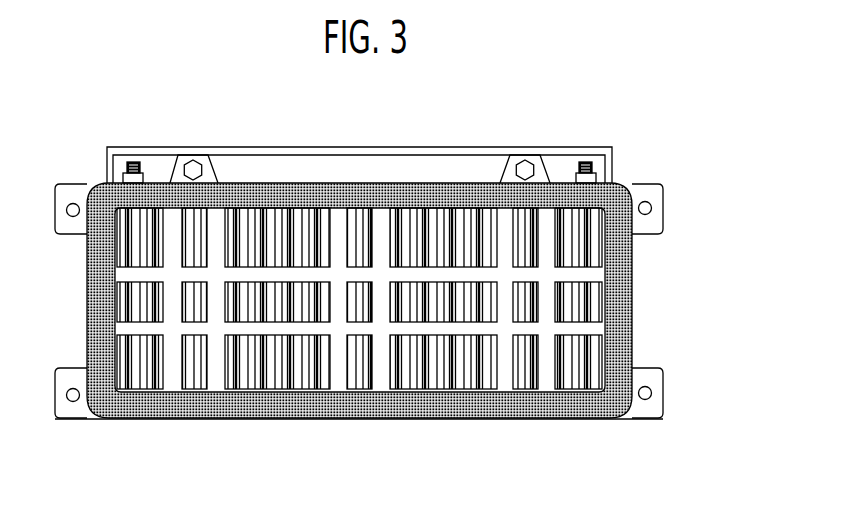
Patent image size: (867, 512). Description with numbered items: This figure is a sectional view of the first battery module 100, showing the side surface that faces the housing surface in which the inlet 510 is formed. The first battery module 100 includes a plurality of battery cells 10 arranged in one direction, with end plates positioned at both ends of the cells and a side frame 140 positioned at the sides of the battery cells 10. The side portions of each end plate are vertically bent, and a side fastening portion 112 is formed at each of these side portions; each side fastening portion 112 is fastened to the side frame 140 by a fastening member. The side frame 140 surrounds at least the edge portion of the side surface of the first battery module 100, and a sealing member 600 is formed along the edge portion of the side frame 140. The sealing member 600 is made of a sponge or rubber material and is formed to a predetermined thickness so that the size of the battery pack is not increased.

The first battery module 100 is at (688, 127).
The side fastening portion 112 is at (655, 221).
The sealing member 600 is at (442, 405).
The battery cell 10 is at (135, 365).
The inlet 510 is at (245, 302).
The side frame 140 is at (548, 373).